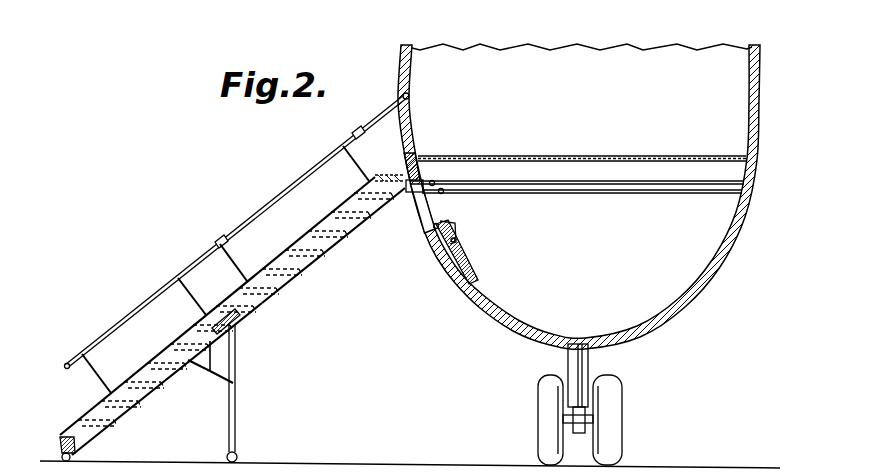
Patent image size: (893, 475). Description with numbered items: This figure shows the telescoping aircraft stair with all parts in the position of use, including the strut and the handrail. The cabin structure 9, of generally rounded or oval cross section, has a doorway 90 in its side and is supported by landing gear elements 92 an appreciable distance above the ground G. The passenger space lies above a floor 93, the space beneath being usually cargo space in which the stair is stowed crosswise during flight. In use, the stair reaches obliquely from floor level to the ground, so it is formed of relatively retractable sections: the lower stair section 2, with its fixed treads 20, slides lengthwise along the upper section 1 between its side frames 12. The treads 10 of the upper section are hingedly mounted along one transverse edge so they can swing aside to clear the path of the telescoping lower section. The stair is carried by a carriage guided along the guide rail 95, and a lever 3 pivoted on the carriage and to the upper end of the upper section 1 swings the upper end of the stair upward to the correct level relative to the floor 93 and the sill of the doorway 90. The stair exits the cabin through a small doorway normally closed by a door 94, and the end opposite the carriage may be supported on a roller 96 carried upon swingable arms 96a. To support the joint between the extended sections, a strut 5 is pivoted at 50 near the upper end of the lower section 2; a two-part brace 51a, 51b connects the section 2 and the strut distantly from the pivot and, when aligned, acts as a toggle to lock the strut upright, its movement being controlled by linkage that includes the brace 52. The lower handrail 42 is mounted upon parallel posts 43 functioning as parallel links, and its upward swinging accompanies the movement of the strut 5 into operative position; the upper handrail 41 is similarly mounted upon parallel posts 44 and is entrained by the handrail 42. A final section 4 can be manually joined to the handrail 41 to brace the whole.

The upper section 1 is at (302, 270).
The lower stair section 2 is at (120, 418).
The lever 3 is at (409, 191).
The final section 4 is at (378, 118).
The strut 5 is at (236, 391).
The cabin structure 9 is at (688, 305).
The treads of the upper section 10 is at (340, 226).
The side frames of the upper section 12 is at (296, 244).
The fixed treads 20 is at (160, 370).
The upper handrail 41 is at (294, 184).
The lower handrail 42 is at (192, 262).
The parallel posts 43 is at (190, 298).
The parallel posts 44 is at (238, 265).
The pivot 50 is at (240, 330).
The brace part 51a is at (196, 368).
The brace part 51b is at (224, 380).
The brace 52 is at (211, 354).
The doorway 90 is at (404, 54).
The landing gear elements 92 is at (612, 414).
The floor 93 is at (650, 157).
The door 94 is at (462, 266).
The guide rail 95 is at (643, 193).
The roller 96 is at (438, 224).
The swingable arms 96a is at (458, 230).
The ground G is at (254, 463).